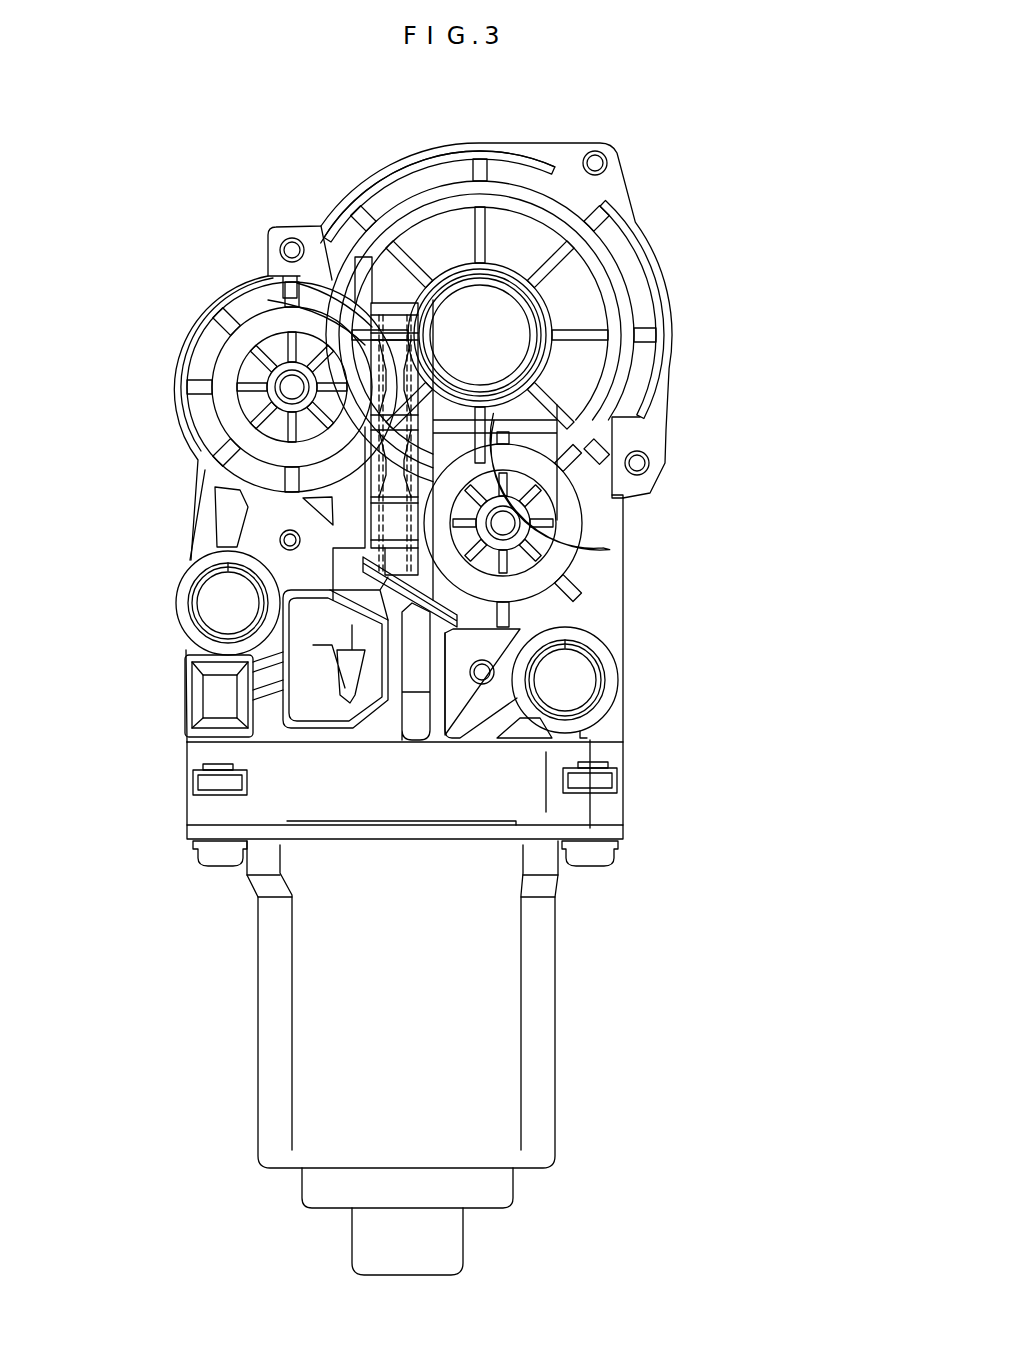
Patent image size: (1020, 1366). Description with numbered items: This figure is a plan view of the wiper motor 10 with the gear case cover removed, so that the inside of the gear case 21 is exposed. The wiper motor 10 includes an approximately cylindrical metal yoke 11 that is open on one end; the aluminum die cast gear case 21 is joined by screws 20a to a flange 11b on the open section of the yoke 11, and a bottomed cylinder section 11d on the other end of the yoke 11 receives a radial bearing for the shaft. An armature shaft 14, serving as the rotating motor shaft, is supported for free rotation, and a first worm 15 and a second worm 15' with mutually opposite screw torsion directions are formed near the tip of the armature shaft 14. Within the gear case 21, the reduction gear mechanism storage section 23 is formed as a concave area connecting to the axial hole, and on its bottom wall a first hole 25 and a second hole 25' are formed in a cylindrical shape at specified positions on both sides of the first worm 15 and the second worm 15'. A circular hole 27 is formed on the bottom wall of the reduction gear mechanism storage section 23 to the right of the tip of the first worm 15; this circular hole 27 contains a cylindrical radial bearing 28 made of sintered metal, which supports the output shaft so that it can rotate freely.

The wiper motor 10 is at (648, 717).
The yoke 11 is at (563, 1029).
The flange 11b is at (590, 833).
The cylinder section 11d is at (463, 1232).
The armature shaft 14 is at (366, 300).
The first worm 15 is at (279, 375).
The second worm 15' is at (570, 529).
The screws 20a is at (218, 862).
The gear case 21 is at (630, 631).
The reduction gear mechanism storage section 23 is at (647, 461).
The first hole 25 is at (203, 398).
The second hole 25' is at (608, 523).
The circular hole 27 is at (527, 318).
The radial bearing 28 is at (458, 280).